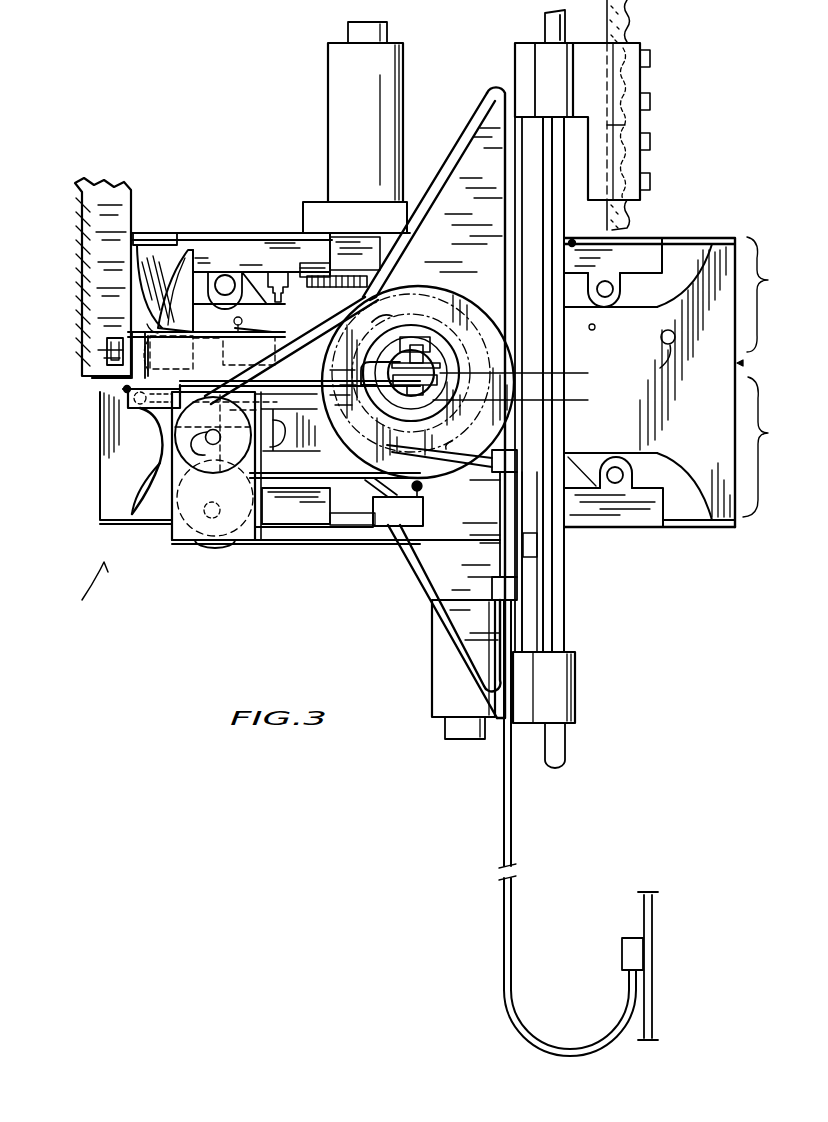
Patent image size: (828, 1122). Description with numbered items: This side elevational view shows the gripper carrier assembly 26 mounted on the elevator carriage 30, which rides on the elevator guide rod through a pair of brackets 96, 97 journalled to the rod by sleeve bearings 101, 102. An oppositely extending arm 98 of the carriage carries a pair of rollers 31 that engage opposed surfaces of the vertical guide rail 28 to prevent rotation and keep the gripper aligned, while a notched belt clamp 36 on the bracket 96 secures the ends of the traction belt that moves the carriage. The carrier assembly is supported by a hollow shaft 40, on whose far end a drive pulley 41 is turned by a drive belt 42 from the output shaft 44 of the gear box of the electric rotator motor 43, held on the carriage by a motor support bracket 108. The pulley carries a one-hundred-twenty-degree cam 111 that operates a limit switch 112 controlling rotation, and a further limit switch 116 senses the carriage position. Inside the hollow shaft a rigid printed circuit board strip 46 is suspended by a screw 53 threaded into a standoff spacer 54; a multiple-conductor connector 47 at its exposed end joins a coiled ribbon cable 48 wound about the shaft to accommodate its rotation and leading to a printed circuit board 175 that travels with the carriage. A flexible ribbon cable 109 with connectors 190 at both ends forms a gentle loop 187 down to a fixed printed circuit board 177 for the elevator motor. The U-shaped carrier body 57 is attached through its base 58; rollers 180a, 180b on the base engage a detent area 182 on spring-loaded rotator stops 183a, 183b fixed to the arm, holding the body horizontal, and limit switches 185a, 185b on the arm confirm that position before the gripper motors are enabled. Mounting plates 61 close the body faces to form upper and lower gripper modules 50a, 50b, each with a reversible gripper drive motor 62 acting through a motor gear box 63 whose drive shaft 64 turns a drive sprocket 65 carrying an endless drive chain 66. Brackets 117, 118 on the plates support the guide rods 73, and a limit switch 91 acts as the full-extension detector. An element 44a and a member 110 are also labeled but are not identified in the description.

The gripper carrier assembly 26 is at (89, 589).
The vertical guide rail 28 is at (112, 192).
The elevator carriage 30 is at (460, 97).
The rollers 31 is at (107, 350).
The notched belt clamp 36 is at (632, 80).
The hollow shaft 40 is at (528, 372).
The drive pulley 41 is at (470, 312).
The drive belt 42 is at (234, 351).
The rotator motor 43 is at (215, 550).
The output shaft 44 is at (232, 476).
The lower pulley 44a is at (215, 498).
The printed circuit board strip 46 is at (525, 400).
The multiple-conductor connector 47 is at (440, 365).
The coiled ribbon cable 48 is at (373, 326).
The upper gripper module 50a is at (730, 294).
The lower gripper module 50b is at (728, 448).
The screw 53 is at (420, 328).
The standoff spacer 54 is at (412, 337).
The carrier body 57 is at (740, 363).
The base 58 is at (634, 352).
The mounting plate 61 is at (167, 232).
The gripper drive motor 62 is at (340, 70).
The motor gear box 63 is at (313, 210).
The drive shaft 64 is at (377, 253).
The drive sprocket 65 is at (356, 262).
The endless drive chain 66 is at (330, 260).
The guide rods 73 is at (231, 278).
The limit switch 91 is at (278, 270).
The bracket 96 is at (528, 55).
The bracket 97 is at (525, 722).
The arm 98 is at (124, 391).
The sleeve bearing 101 is at (558, 70).
The sleeve bearing 102 is at (555, 700).
The motor support bracket 108 is at (302, 530).
The flexible ribbon cable 109 is at (504, 808).
The link 110 is at (490, 470).
The cam 111 is at (322, 338).
The limit switch 112 is at (393, 513).
The limit switch 116 is at (588, 263).
The bracket 117 is at (235, 245).
The bracket 118 is at (290, 518).
The printed circuit board 175 is at (520, 583).
The printed circuit board 177 is at (656, 1013).
The roller 180a is at (140, 336).
The roller 180b is at (652, 366).
The detent area 182 is at (154, 326).
The rotator stop 183a is at (158, 245).
The rotator stop 183b is at (160, 462).
The limit switch 185a is at (170, 353).
The limit switch 185b is at (265, 452).
The loop 187 is at (532, 1018).
The connectors 190 is at (493, 590).